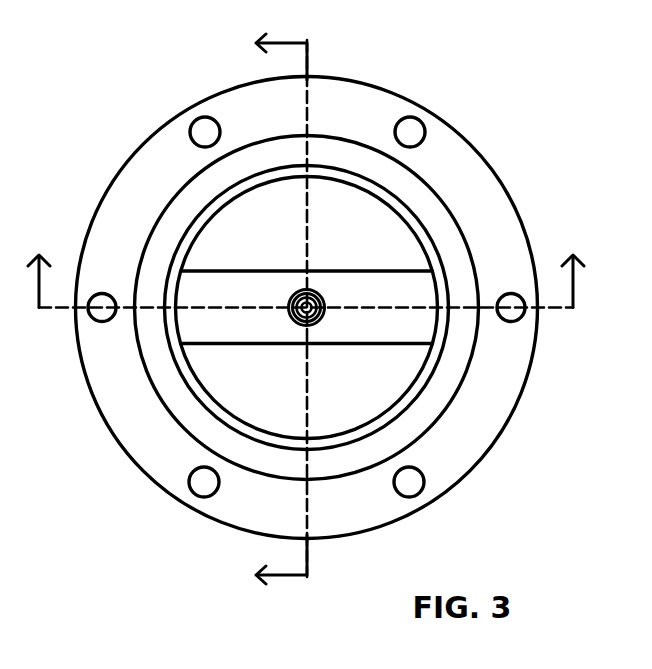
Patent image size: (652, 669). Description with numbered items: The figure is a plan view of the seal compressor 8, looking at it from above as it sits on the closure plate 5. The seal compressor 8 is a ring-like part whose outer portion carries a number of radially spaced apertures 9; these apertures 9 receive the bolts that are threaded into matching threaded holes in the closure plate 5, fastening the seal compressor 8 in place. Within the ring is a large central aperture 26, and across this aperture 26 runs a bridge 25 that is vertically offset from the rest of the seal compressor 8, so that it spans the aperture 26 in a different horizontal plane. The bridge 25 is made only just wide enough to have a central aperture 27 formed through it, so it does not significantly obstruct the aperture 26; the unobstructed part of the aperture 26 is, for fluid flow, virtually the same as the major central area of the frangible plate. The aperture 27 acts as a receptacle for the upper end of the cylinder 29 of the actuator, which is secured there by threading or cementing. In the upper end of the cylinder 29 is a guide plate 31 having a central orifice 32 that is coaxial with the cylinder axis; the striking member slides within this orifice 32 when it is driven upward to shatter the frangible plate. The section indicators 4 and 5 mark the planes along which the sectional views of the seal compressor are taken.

The section line 4- 4 is at (262, 307).
The closure plate 5 is at (306, 261).
The seal compressor 8 is at (507, 425).
The radially spaced apertures 9 is at (197, 146).
The bridge 25 is at (333, 344).
The aperture 26 is at (307, 308).
The aperture 27 is at (291, 300).
The cylinder 29 is at (321, 300).
The plate 31 is at (320, 318).
The orifice 32 is at (296, 316).